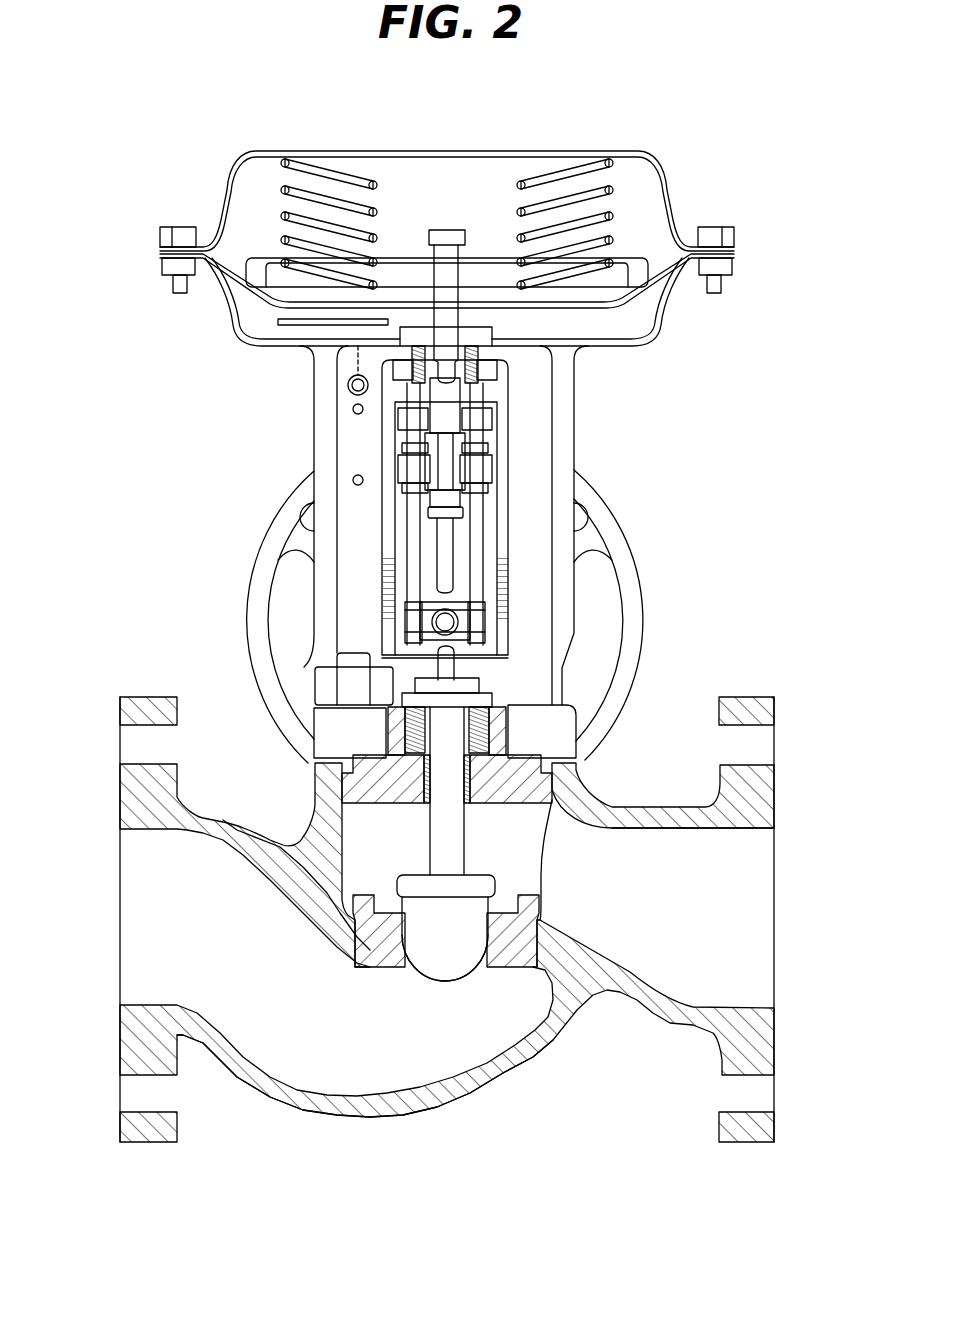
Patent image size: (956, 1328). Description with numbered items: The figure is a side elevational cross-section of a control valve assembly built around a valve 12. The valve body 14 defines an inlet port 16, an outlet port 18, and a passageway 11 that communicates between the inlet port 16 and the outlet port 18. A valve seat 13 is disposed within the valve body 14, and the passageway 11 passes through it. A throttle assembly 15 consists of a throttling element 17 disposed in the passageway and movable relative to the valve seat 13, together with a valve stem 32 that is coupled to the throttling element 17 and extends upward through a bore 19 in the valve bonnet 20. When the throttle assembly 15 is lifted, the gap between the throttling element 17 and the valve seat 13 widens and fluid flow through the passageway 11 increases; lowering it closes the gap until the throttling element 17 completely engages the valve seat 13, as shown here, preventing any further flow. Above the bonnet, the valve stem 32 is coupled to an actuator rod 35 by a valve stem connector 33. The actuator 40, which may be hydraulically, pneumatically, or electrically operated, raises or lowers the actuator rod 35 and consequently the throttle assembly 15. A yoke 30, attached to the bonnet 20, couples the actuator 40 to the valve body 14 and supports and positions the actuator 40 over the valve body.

The passageway 11 is at (453, 1037).
The valve 12 is at (669, 980).
The valve seat 13 is at (390, 912).
The valve body 14 is at (348, 1116).
The throttle assembly 15 is at (505, 866).
The inlet port 16 is at (119, 921).
The throttling element 17 is at (410, 976).
The outlet port 18 is at (775, 892).
The bore 19 is at (473, 767).
The valve bonnet 20 is at (348, 728).
The yoke 30 is at (357, 549).
The valve stem 32 is at (447, 577).
The valve stem connector 33 is at (492, 473).
The actuator rod 35 is at (449, 357).
The actuator 40 is at (226, 183).